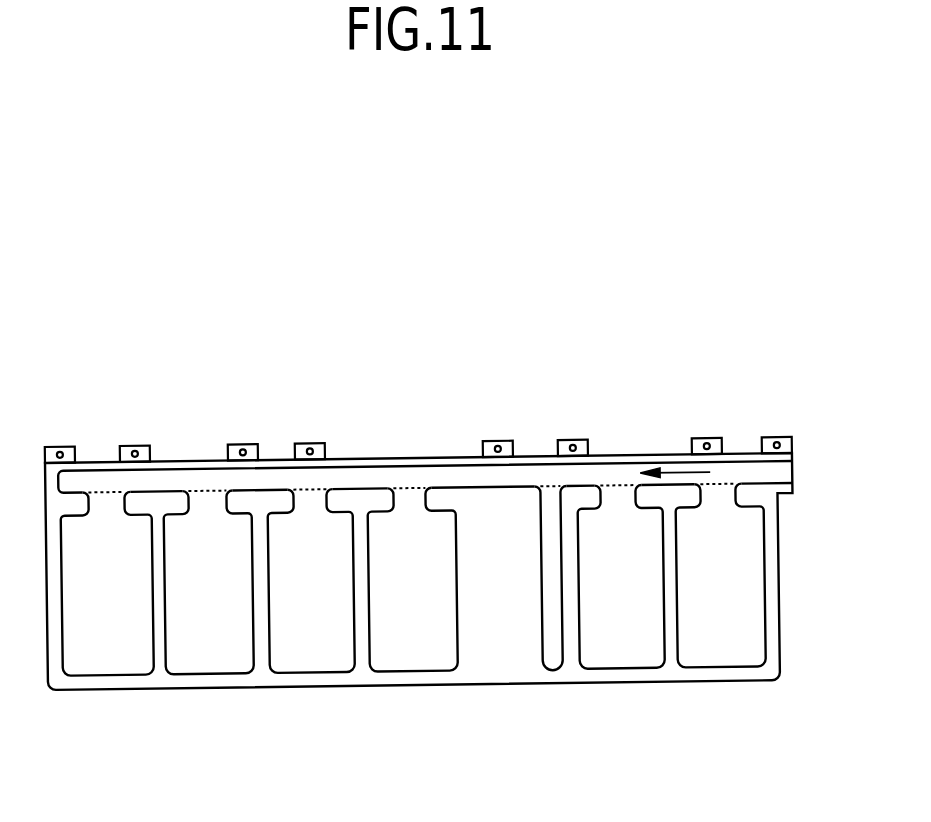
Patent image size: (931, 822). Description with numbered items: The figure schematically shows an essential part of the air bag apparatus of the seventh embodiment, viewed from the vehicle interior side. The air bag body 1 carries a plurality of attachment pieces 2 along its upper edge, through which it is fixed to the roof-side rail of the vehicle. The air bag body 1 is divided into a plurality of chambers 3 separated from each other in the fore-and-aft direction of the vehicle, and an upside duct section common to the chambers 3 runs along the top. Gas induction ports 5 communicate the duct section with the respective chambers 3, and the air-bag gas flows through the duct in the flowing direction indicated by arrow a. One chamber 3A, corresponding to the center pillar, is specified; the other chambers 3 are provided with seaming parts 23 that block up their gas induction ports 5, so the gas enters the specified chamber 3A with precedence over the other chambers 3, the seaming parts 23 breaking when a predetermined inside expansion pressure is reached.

The air bag body 1 is at (208, 696).
The attachment pieces 2 is at (68, 447).
The chambers 3 is at (90, 650).
The specified chamber 3A is at (405, 650).
The gas induction ports 5 is at (88, 506).
The seaming part 23 is at (99, 493).
The flowing direction of the air-bag gas a is at (663, 477).